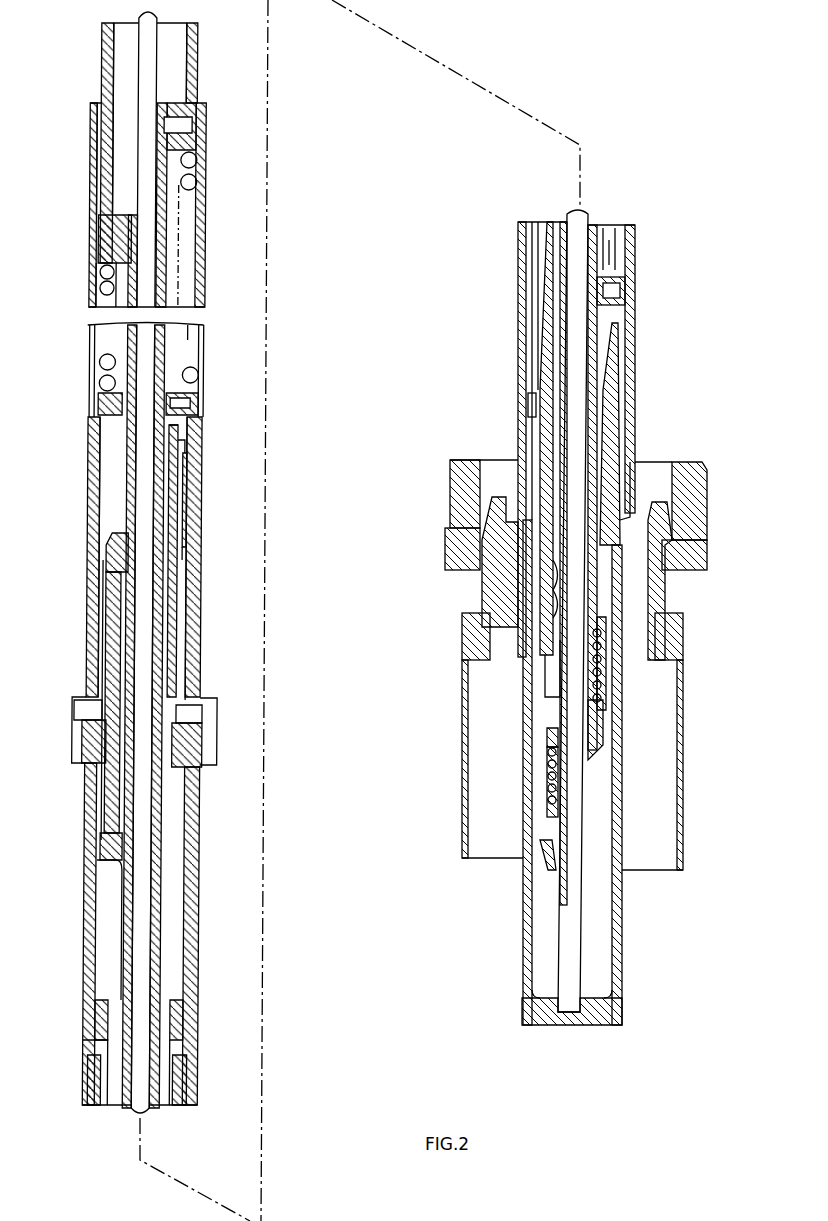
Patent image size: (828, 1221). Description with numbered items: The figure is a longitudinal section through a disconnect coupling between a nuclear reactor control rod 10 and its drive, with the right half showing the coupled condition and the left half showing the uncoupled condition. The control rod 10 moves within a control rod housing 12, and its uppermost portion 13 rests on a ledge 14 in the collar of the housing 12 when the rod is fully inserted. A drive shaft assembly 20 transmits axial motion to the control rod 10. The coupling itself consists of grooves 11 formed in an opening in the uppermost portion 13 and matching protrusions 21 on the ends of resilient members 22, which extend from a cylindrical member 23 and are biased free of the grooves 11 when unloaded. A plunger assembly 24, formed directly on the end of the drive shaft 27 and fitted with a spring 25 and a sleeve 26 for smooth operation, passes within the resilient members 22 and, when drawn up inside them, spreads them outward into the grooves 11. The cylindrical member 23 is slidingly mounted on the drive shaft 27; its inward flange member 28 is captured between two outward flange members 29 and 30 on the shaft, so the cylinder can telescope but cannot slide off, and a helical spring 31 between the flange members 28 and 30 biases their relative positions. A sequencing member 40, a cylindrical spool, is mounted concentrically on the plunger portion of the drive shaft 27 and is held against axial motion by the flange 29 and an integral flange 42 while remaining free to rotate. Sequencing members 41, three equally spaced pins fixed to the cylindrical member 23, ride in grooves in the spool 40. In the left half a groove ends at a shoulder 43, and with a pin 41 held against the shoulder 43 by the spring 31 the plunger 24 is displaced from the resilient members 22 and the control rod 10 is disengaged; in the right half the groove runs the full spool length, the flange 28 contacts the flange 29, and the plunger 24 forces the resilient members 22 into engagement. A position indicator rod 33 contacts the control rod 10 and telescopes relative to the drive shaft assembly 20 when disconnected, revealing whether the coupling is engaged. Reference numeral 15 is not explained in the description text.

The control rod 10 is at (497, 1046).
The grooves 11 is at (540, 598).
The control rod housing 12 is at (462, 800).
The uppermost portion 13 is at (530, 1010).
The ledge 14 is at (648, 578).
The pin 15 is at (625, 510).
The drive shaft assembly 20 is at (100, 85).
The protrusions 21 is at (570, 572).
The resilient members 22 is at (545, 272).
The cylindrical member 23 is at (88, 938).
The plunger assembly 24 is at (600, 629).
The spring 25 is at (547, 793).
The sleeve 26 is at (547, 737).
The drive shaft 27 is at (102, 62).
The flange member 28 is at (104, 402).
The flange member 29 is at (118, 542).
The flange member 30 is at (112, 240).
The helical spring 31 is at (198, 182).
The position indicator rod 33 is at (146, 154).
The sequencing member 40 is at (188, 536).
The sequencing members 41 is at (200, 712).
The flange 42 is at (106, 868).
The shoulder 43 is at (84, 743).